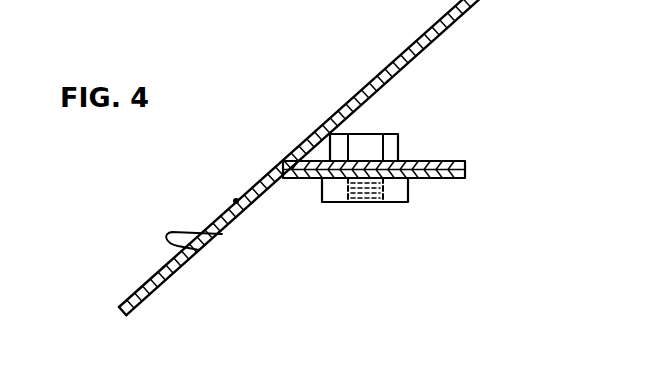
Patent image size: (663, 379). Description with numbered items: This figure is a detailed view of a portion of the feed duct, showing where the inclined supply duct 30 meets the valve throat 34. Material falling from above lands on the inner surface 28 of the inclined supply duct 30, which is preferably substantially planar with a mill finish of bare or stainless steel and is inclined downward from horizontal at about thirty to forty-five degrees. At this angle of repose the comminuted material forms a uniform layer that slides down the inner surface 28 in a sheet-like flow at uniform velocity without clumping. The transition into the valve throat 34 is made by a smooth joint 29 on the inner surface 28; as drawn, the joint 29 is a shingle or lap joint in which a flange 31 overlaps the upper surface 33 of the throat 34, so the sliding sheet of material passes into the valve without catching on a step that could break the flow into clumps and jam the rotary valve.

The inner surface 28 is at (357, 95).
The joint 29 is at (236, 201).
The inclined supply duct 30 is at (441, 34).
The flange 31 is at (298, 143).
The upper surface of throat 33 is at (222, 234).
The valve throat 34 is at (138, 266).